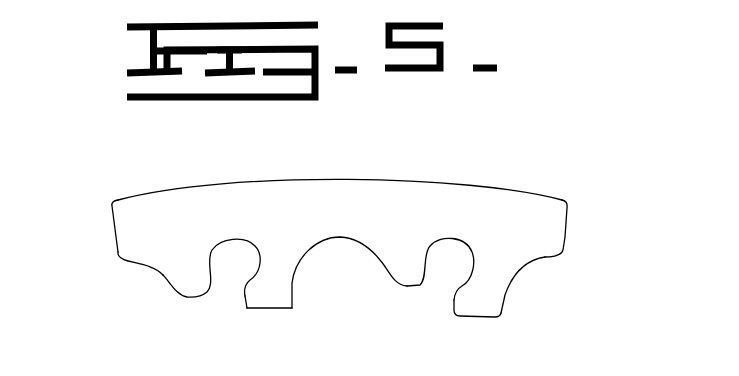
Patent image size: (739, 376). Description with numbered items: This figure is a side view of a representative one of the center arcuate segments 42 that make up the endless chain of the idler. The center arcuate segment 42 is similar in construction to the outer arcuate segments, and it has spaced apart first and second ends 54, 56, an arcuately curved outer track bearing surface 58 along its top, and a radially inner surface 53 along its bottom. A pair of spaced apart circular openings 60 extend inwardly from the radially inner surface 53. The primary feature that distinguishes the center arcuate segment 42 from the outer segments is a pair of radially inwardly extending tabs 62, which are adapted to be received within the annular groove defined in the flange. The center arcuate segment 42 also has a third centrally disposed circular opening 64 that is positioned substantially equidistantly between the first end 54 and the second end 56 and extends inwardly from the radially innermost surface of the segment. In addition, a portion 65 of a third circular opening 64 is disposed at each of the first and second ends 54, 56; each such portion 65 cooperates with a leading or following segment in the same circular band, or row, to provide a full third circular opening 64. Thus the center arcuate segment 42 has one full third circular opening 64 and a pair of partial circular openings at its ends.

The center arcuate segment 42 is at (398, 163).
The radially inner surface 53 is at (273, 308).
The first end 54 is at (135, 225).
The second end 56 is at (557, 228).
The arcuately curved outer track bearing surface 58 is at (290, 181).
The circular opening 60 is at (212, 253).
The radially inwardly extending tab 62 is at (277, 297).
The third centrally disposed circular opening 64 is at (372, 249).
The portion of the third circular opening 65 is at (163, 278).